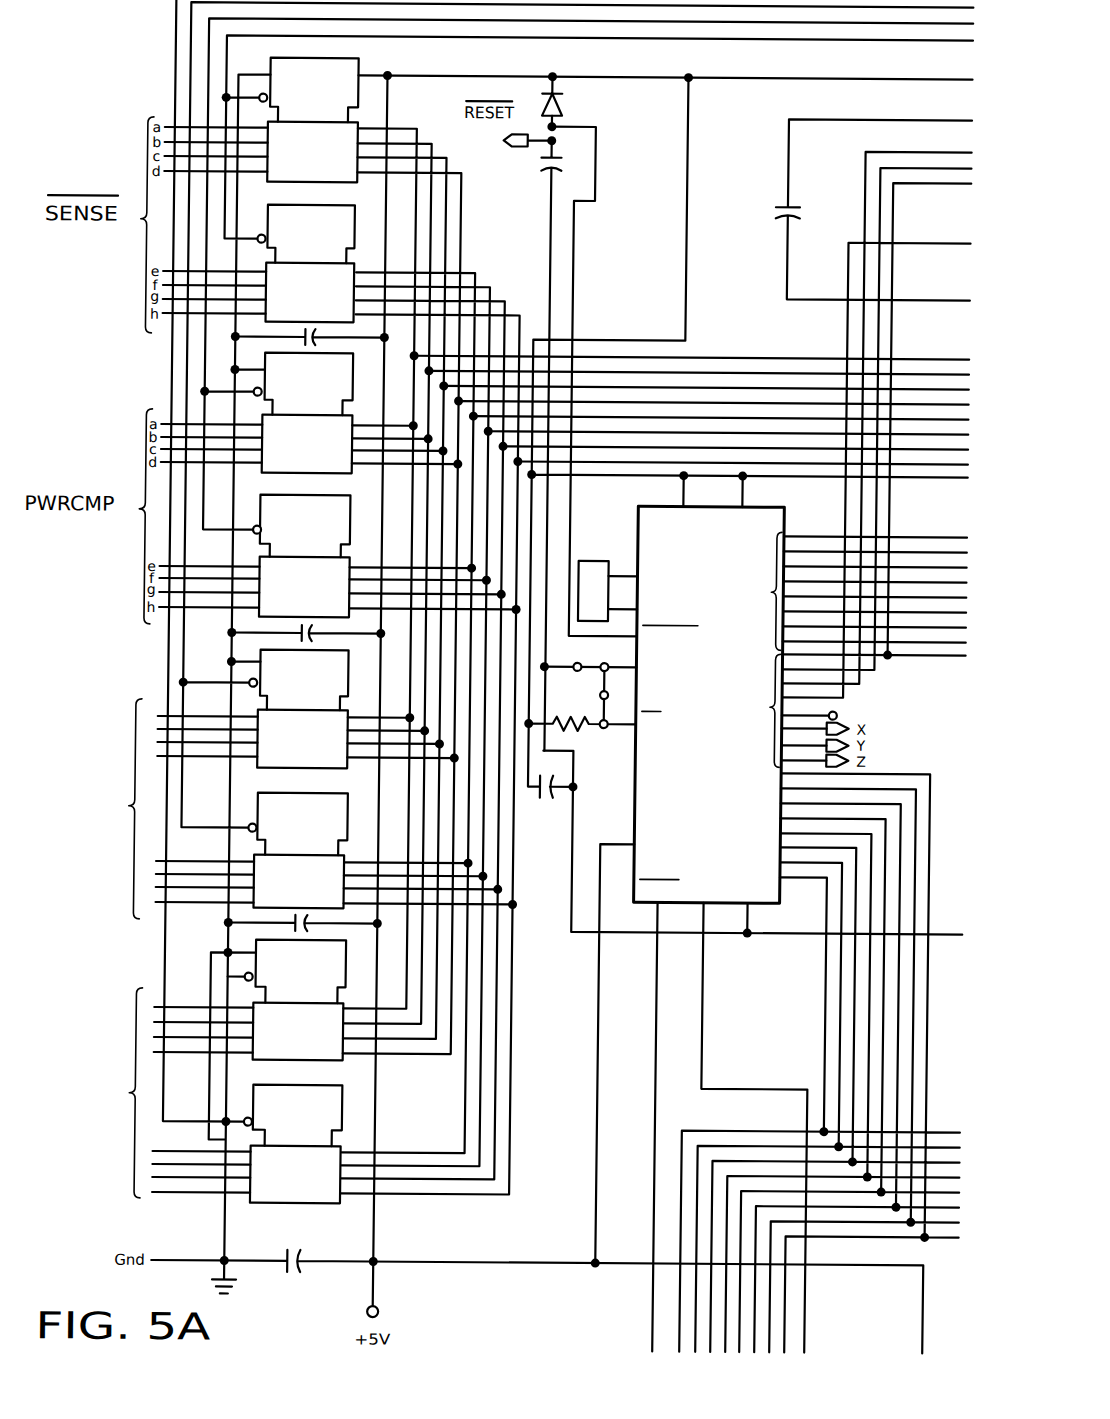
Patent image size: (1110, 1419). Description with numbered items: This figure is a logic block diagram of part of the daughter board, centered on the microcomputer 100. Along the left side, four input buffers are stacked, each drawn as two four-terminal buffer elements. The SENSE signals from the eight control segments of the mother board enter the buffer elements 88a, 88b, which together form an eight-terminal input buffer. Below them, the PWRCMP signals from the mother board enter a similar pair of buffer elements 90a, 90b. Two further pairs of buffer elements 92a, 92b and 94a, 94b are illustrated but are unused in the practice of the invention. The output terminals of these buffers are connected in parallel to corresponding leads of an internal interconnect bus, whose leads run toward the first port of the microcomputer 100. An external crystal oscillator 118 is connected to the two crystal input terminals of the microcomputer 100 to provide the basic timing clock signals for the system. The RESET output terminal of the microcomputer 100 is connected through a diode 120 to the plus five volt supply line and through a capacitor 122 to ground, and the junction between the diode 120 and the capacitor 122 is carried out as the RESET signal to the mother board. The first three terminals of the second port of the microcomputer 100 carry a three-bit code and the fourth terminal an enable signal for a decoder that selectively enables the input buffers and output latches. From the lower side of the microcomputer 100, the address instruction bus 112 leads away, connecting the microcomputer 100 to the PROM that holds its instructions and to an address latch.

The buffer element 88a is at (331, 165).
The buffer element 88b is at (330, 305).
The buffer element 90a is at (329, 456).
The buffer element 90b is at (328, 600).
The buffer element 92a is at (328, 751).
The buffer element 92b is at (326, 895).
The buffer element 94a is at (326, 1044).
The buffer element 94b is at (325, 1187).
The microcomputer 100 is at (638, 528).
The address instruction bus 112 is at (814, 1006).
The external crystal oscillator 118 is at (580, 560).
The diode 120 is at (562, 104).
The capacitor 122 is at (540, 167).